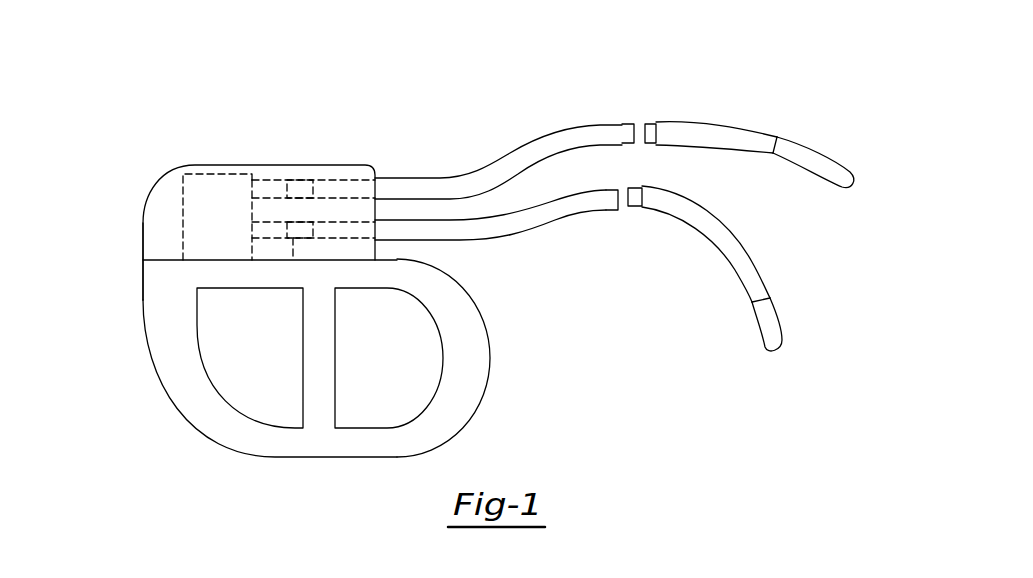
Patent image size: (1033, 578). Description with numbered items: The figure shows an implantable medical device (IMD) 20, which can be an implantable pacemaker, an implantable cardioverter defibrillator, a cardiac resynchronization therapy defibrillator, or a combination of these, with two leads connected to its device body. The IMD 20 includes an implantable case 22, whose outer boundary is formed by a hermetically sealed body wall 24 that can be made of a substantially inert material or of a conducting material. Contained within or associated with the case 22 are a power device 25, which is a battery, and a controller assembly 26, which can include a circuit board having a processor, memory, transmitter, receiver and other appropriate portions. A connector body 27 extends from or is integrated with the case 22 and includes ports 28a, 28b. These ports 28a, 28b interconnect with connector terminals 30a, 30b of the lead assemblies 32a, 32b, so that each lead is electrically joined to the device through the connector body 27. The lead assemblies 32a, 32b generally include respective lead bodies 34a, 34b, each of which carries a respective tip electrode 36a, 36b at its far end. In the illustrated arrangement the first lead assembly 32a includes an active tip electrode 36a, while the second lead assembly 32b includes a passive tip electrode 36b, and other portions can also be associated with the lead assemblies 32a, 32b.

The implantable medical device 20 is at (237, 132).
The implantable case 22 is at (485, 316).
The body wall 24 is at (481, 365).
The power device 25 is at (272, 405).
The controller assembly 26 is at (370, 405).
The connector body 27 is at (150, 225).
The port 28a is at (343, 180).
The port 28b is at (334, 234).
The connector terminal 30a is at (300, 182).
The connector terminal 30b is at (293, 262).
The first lead assembly 32a is at (514, 125).
The second lead assembly 32b is at (548, 250).
The lead body 34a is at (708, 134).
The lead body 34b is at (684, 200).
The active tip electrode 36a is at (834, 152).
The passive tip electrode 36b is at (765, 330).